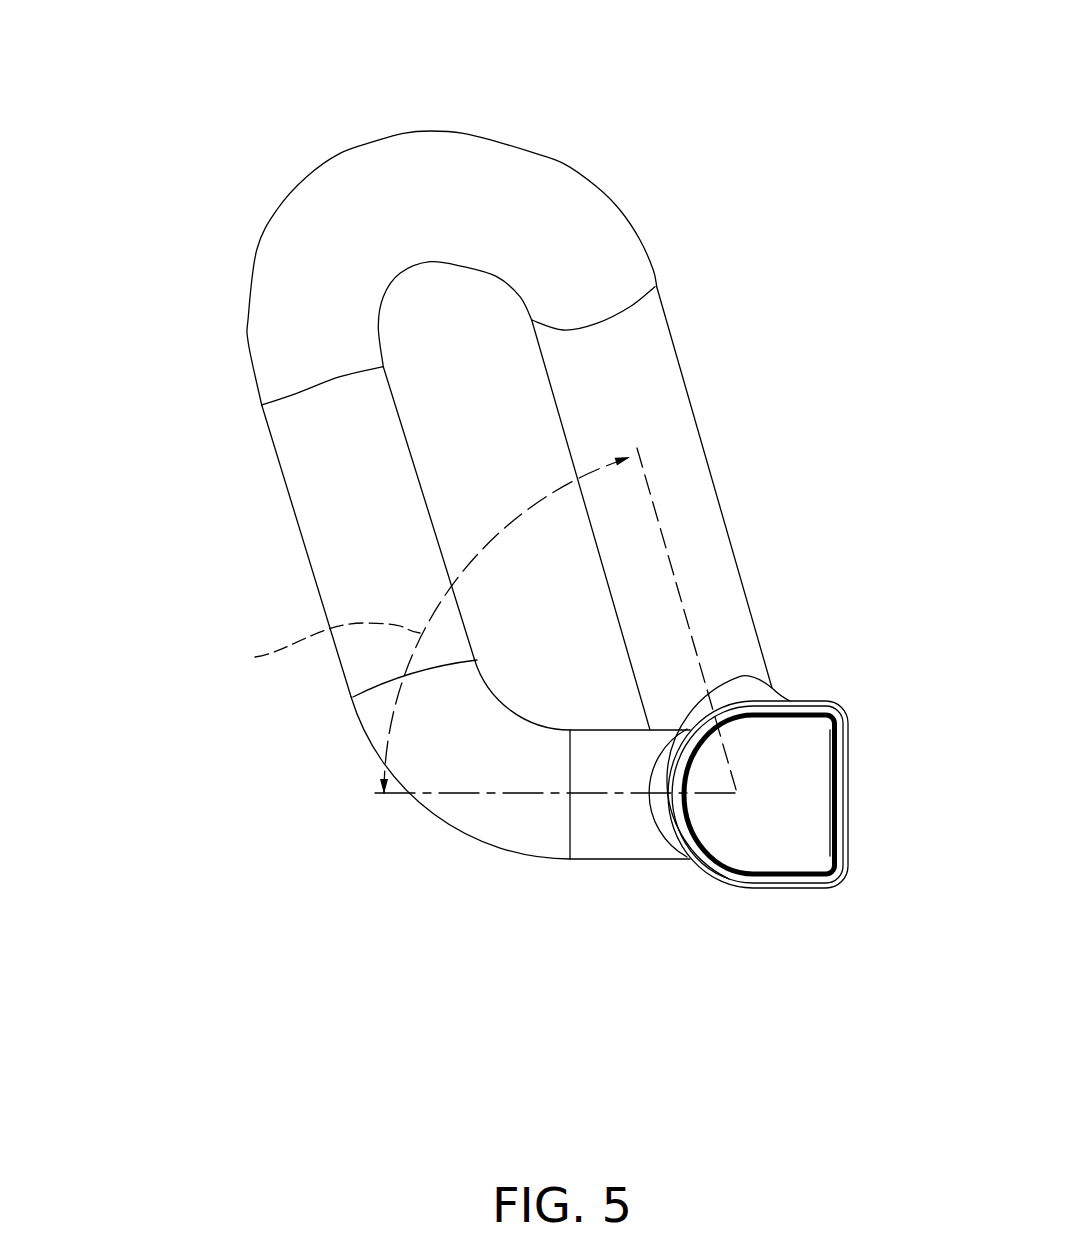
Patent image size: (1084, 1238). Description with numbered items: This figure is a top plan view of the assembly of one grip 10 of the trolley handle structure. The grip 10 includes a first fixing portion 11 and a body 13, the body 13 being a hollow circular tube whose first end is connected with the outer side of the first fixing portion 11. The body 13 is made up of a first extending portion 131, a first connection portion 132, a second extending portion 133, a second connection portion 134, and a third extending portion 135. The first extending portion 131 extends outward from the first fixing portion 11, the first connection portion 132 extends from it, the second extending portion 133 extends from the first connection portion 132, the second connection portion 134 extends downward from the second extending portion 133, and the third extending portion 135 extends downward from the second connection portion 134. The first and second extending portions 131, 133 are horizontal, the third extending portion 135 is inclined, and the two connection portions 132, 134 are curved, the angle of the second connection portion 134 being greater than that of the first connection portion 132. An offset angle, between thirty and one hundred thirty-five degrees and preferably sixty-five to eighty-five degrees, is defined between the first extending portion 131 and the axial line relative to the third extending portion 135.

The grip 10 is at (499, 539).
The first fixing portion 11 is at (783, 888).
The body 13 is at (499, 510).
The first extending portion 131 is at (623, 830).
The first connection portion 132 is at (480, 807).
The second extending portion 133 is at (352, 536).
The second connection portion 134 is at (398, 188).
The third extending portion 135 is at (677, 480).